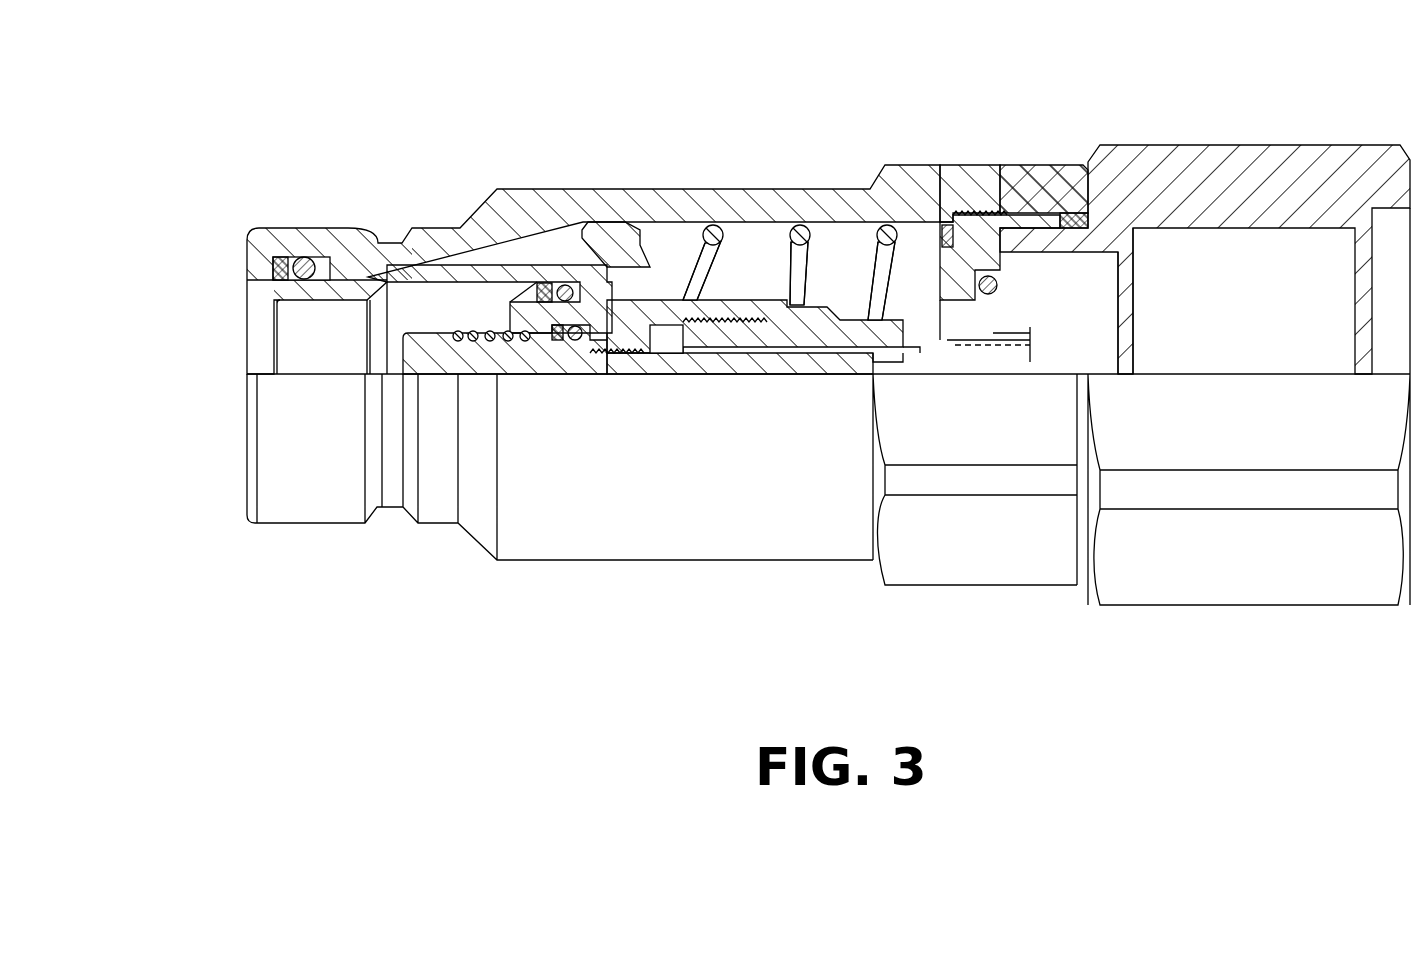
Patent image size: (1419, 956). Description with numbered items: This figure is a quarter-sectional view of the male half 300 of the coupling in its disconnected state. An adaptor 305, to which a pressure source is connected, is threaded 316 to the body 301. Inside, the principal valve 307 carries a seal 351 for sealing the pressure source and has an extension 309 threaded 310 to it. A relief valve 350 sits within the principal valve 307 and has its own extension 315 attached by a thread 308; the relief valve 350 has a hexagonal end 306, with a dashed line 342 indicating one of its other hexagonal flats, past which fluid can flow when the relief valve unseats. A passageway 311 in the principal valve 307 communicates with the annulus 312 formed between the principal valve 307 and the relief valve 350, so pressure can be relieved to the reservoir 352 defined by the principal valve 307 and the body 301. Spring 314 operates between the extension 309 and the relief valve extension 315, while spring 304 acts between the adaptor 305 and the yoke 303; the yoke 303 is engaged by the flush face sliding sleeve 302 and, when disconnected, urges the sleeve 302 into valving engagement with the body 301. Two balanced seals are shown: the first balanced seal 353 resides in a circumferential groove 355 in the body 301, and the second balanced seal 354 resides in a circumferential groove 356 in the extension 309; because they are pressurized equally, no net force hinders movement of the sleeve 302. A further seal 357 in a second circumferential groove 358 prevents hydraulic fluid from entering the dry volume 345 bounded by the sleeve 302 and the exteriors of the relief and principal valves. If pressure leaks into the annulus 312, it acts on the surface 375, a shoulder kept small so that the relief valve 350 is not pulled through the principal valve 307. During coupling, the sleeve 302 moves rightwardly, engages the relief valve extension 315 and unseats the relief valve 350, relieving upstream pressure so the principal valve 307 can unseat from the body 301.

The male half 300 is at (838, 168).
The body 301 is at (503, 207).
The flush face sliding sleeve 302 is at (248, 328).
The yoke 303 is at (610, 245).
The spring 304 is at (953, 243).
The adaptor 305 is at (1240, 185).
The hexagonal end 306 is at (985, 373).
The principal valve 307 is at (1000, 310).
The thread 308 is at (610, 362).
The extension 309 is at (665, 300).
The thread 310 is at (748, 290).
The passageway 311 is at (800, 335).
The annulus 312 is at (717, 375).
The spring 314 is at (495, 342).
The relief valve extension 315 is at (420, 345).
The thread 316 is at (1068, 212).
The dashed line 342 is at (856, 365).
The dry volume 345 is at (320, 355).
The relief valve 350 is at (985, 375).
The seal 351 is at (1136, 228).
The reservoir 352 is at (838, 255).
The first balanced seal 353 is at (268, 232).
The second balanced seal 354 is at (543, 280).
The circumferential groove 355 is at (332, 232).
The circumferential groove 356 is at (570, 288).
The seal 357 is at (560, 345).
The second circumferential groove 358 is at (590, 345).
The surface 375 is at (688, 378).